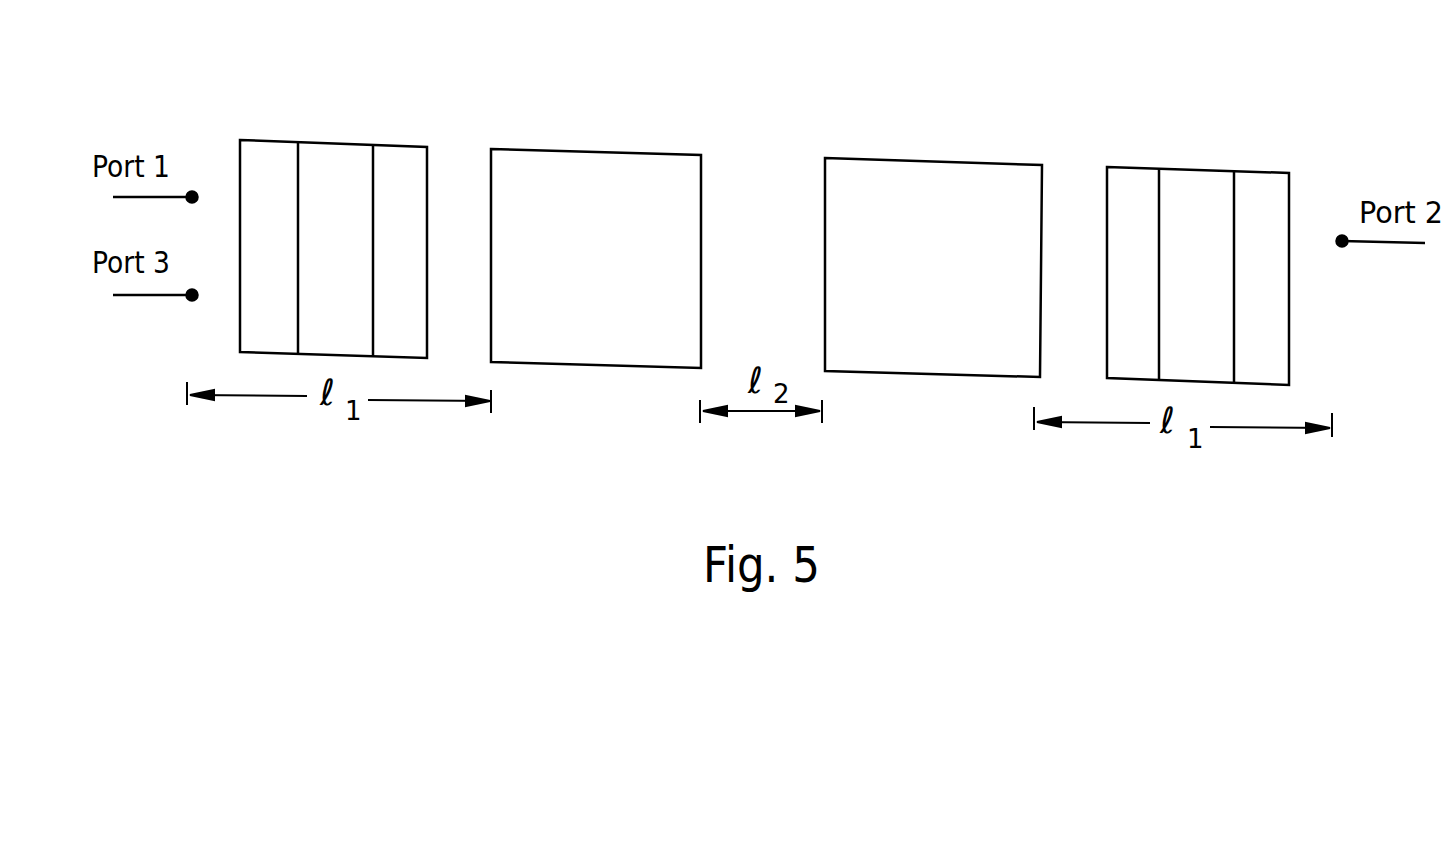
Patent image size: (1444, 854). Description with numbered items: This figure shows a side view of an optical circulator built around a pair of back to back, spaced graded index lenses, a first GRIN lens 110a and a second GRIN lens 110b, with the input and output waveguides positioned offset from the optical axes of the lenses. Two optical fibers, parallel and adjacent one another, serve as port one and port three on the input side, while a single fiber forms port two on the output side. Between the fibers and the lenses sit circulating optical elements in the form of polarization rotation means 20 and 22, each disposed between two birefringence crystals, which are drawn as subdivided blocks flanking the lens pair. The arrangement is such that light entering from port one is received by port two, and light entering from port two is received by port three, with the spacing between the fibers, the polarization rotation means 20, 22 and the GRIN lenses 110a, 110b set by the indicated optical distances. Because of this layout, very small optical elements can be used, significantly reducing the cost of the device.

The polarization rotation means 20 is at (342, 142).
The GRIN lens 110a is at (607, 165).
The GRIN lens 110b is at (930, 182).
The polarization rotation means 22 is at (1207, 168).